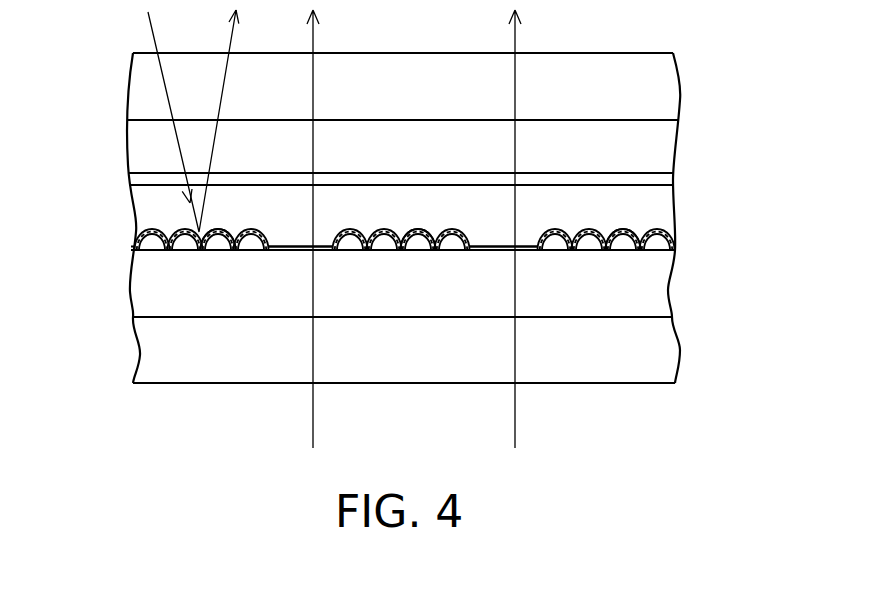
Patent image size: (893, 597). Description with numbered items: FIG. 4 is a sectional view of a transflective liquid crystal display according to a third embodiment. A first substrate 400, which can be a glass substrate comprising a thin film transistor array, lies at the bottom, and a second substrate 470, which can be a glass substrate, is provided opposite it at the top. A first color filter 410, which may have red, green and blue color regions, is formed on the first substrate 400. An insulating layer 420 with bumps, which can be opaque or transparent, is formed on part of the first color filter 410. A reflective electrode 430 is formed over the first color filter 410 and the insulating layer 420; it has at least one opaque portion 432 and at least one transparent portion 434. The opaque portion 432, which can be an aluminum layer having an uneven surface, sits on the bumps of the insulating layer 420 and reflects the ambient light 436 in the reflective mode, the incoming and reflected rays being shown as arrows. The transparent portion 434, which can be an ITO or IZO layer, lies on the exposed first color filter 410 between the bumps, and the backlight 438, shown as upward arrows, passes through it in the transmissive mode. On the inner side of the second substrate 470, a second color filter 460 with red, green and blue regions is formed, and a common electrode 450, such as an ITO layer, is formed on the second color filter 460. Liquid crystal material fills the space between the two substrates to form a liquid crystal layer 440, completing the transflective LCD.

The first substrate 400 is at (655, 337).
The first color filter 410 is at (655, 288).
The insulating layer 420 is at (668, 250).
The reflective electrode 430 is at (672, 225).
The opaque portion 432 is at (215, 238).
The transparent portion 434 is at (287, 252).
The ambient light 436 is at (143, 35).
The backlight 438 is at (316, 408).
The liquid crystal layer 440 is at (668, 205).
The common electrode 450 is at (658, 178).
The second color filter 460 is at (655, 148).
The second substrate 470 is at (668, 83).